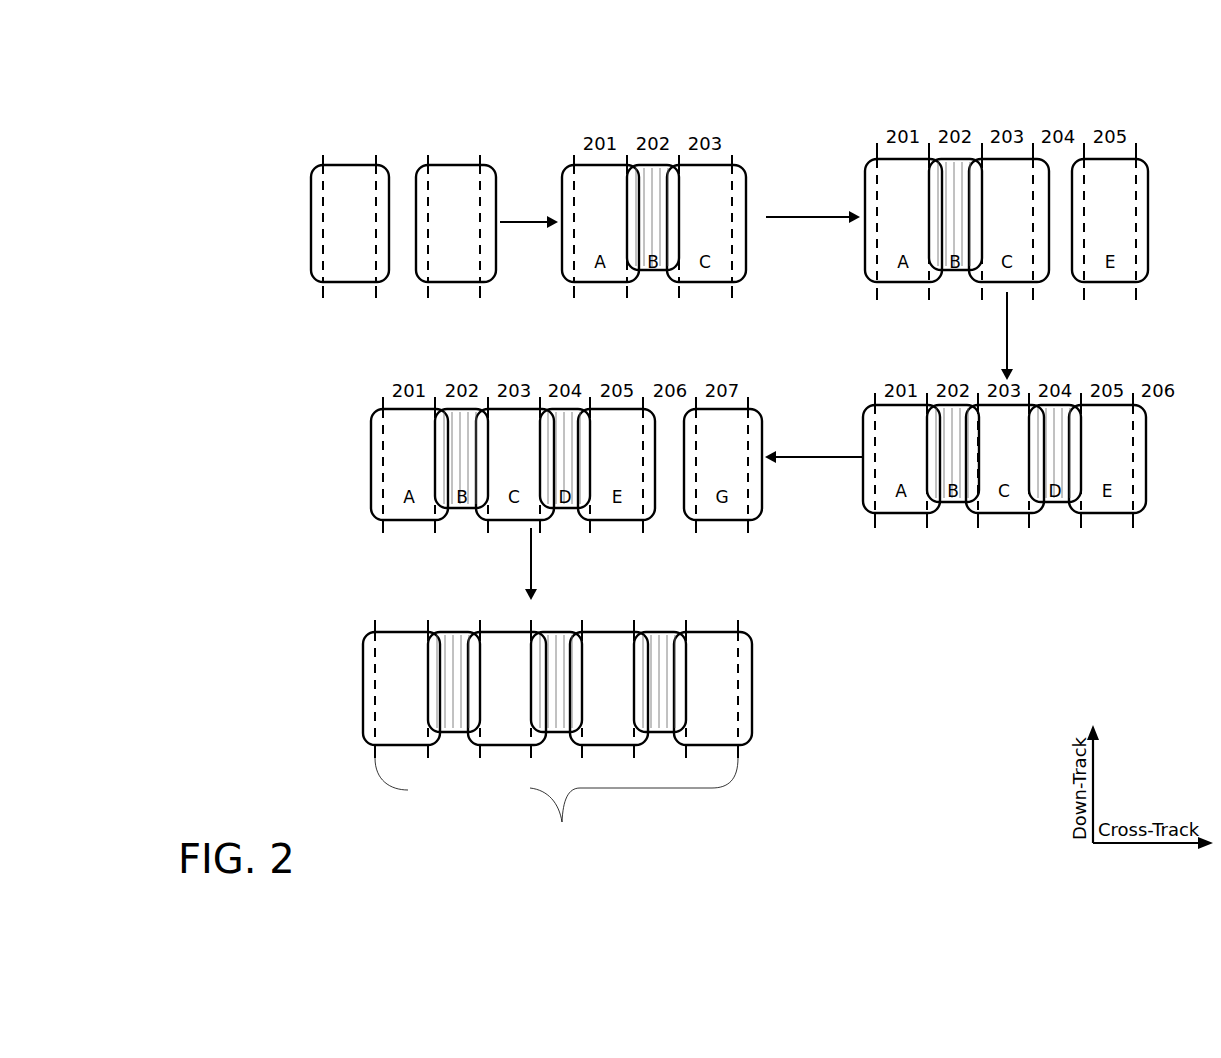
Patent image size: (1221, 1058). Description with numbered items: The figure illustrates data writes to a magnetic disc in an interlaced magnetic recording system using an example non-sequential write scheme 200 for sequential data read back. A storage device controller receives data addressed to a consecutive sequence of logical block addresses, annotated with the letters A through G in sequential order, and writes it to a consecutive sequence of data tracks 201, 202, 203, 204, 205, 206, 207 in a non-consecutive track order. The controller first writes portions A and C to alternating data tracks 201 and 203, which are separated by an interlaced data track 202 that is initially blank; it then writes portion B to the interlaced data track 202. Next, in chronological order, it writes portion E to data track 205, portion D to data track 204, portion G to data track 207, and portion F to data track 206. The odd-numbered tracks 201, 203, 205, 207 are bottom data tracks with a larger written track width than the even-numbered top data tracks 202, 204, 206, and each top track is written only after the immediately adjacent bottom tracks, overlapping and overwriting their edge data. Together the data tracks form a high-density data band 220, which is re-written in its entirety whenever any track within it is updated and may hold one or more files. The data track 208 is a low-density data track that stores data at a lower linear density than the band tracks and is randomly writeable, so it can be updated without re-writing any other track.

The non-sequential write scheme 200 is at (276, 104).
The data track 201 is at (401, 679).
The interlaced data track 202 is at (454, 679).
The data track 203 is at (505, 679).
The data track 204 is at (556, 679).
The data track 205 is at (608, 679).
The data track 206 is at (660, 679).
The data track 207 is at (712, 679).
The low-density data track 208 is at (766, 680).
The high-density data band 220 is at (563, 817).